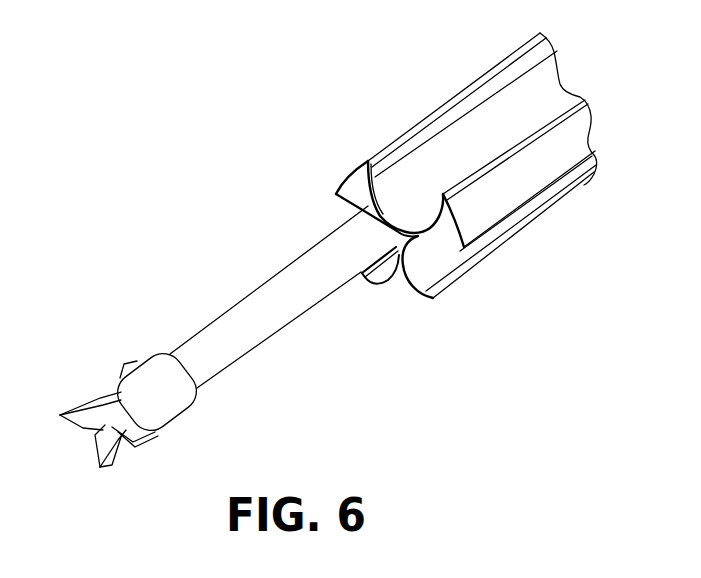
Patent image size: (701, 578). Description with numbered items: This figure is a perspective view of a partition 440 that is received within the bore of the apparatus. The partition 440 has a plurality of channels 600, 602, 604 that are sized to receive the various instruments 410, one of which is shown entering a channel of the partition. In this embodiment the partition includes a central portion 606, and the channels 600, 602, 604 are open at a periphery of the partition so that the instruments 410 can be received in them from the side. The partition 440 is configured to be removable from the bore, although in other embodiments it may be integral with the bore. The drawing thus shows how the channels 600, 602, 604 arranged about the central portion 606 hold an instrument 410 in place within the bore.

The partition 440 is at (398, 147).
The channel 600 is at (367, 225).
The channel 604 is at (411, 196).
The channel 602 is at (428, 257).
The central portion 606 is at (398, 242).
The instrument 410 is at (224, 333).